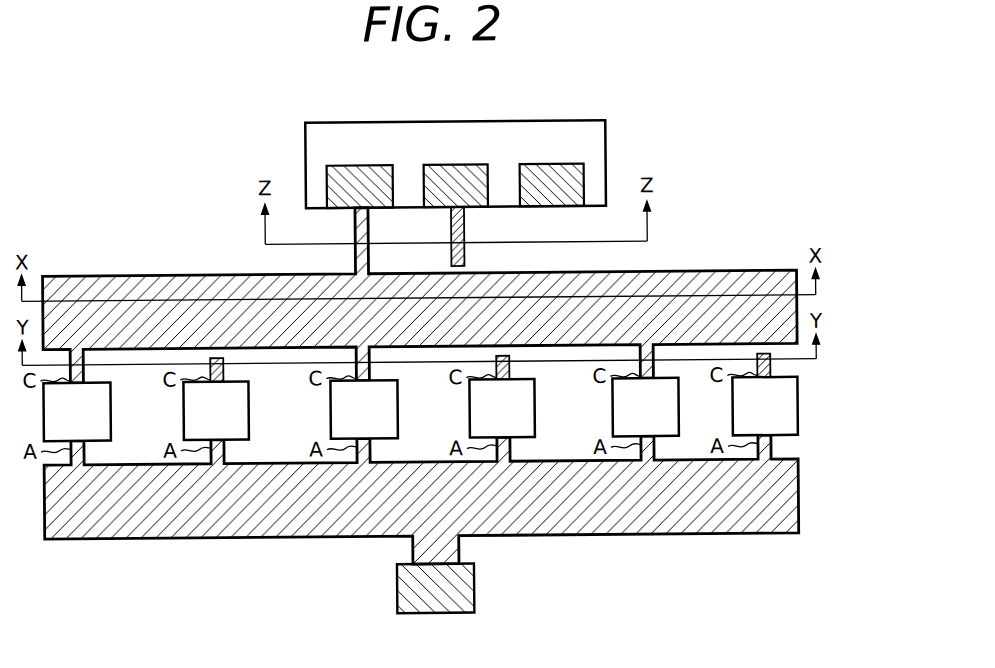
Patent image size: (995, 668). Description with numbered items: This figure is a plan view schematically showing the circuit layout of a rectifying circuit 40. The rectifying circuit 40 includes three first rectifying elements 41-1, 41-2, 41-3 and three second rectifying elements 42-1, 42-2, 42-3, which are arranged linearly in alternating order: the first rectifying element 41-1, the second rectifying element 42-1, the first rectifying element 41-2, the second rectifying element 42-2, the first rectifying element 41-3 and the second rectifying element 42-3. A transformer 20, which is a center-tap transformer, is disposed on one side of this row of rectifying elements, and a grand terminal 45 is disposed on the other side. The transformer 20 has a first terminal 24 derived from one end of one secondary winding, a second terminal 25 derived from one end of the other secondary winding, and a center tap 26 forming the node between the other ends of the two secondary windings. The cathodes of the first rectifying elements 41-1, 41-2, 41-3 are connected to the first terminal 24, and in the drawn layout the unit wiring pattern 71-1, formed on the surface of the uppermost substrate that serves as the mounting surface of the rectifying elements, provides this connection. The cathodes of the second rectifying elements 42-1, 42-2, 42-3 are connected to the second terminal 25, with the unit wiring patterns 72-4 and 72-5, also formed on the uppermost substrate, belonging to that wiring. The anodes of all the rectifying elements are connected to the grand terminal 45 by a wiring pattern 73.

The transformer 20 is at (607, 144).
The first terminal 24 is at (373, 176).
The second terminal 25 is at (463, 178).
The center tap 26 is at (560, 180).
The rectifying circuit 40 is at (691, 223).
The first rectifying element 41-1 is at (76, 412).
The first rectifying element 41-2 is at (363, 409).
The first rectifying element 41-3 is at (645, 407).
The second rectifying element 42-1 is at (215, 410).
The second rectifying element 42-2 is at (501, 408).
The second rectifying element 42-3 is at (764, 406).
The grand terminal 45 is at (472, 579).
The unit wiring pattern 71-1 is at (732, 273).
The unit wiring pattern 72-4 is at (223, 372).
The unit wiring pattern 72-5 is at (466, 226).
The wiring pattern 73 is at (715, 536).